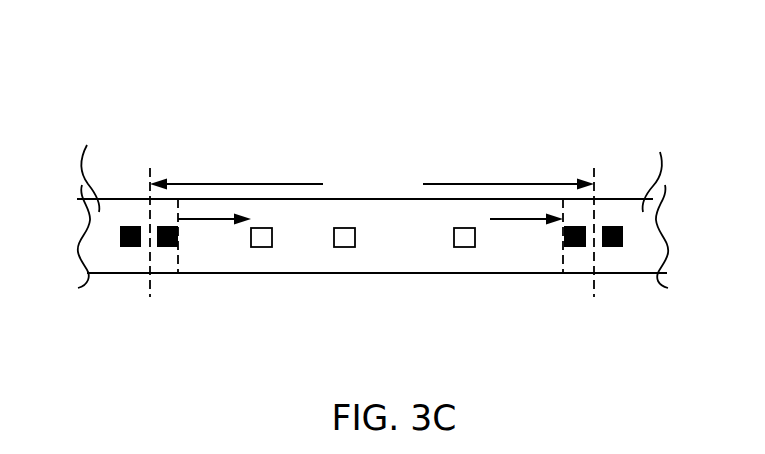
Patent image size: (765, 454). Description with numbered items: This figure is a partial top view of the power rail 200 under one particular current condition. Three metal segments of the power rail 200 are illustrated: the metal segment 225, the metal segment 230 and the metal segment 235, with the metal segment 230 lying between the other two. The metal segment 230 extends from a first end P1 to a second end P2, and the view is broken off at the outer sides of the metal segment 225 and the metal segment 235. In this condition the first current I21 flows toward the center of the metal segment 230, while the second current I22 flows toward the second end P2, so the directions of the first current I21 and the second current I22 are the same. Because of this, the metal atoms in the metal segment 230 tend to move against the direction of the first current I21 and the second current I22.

The power rail 200 is at (175, 36).
The metal segment 225 is at (80, 199).
The metal segment 235 is at (662, 199).
The metal segment 230 is at (372, 182).
The first end P1 is at (147, 217).
The second end P2 is at (594, 217).
The first current I21 is at (214, 236).
The second current I22 is at (526, 236).